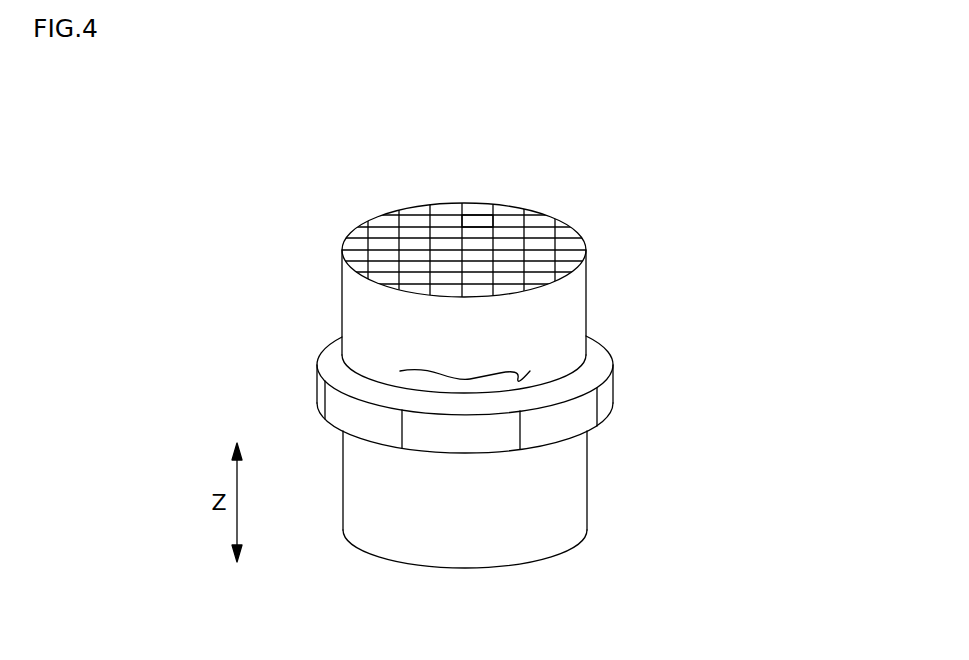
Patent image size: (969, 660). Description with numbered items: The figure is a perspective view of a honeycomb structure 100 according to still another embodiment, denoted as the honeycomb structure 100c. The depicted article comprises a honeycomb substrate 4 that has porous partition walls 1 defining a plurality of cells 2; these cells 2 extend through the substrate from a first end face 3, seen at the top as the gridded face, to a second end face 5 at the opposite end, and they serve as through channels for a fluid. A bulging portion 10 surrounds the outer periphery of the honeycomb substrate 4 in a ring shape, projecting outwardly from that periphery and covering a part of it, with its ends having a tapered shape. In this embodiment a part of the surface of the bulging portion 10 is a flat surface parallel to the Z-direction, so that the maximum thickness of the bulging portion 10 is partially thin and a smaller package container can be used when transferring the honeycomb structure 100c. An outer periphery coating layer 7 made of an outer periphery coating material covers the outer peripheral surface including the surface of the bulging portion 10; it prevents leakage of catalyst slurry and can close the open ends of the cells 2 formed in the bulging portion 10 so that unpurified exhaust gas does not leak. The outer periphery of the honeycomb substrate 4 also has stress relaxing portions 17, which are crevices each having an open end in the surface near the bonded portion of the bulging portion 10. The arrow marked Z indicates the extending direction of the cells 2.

The partition walls 1 is at (427, 220).
The cells 2 is at (483, 217).
The first end face 3 is at (342, 237).
The honeycomb substrate 4 is at (540, 221).
The second end face 5 is at (358, 548).
The outer periphery coating layer 7 is at (348, 317).
The bulging portion 10 is at (617, 390).
The stress relaxing portions 17 is at (500, 378).
The honeycomb structure 100 is at (672, 102).
The honeycomb structure 100c is at (745, 102).